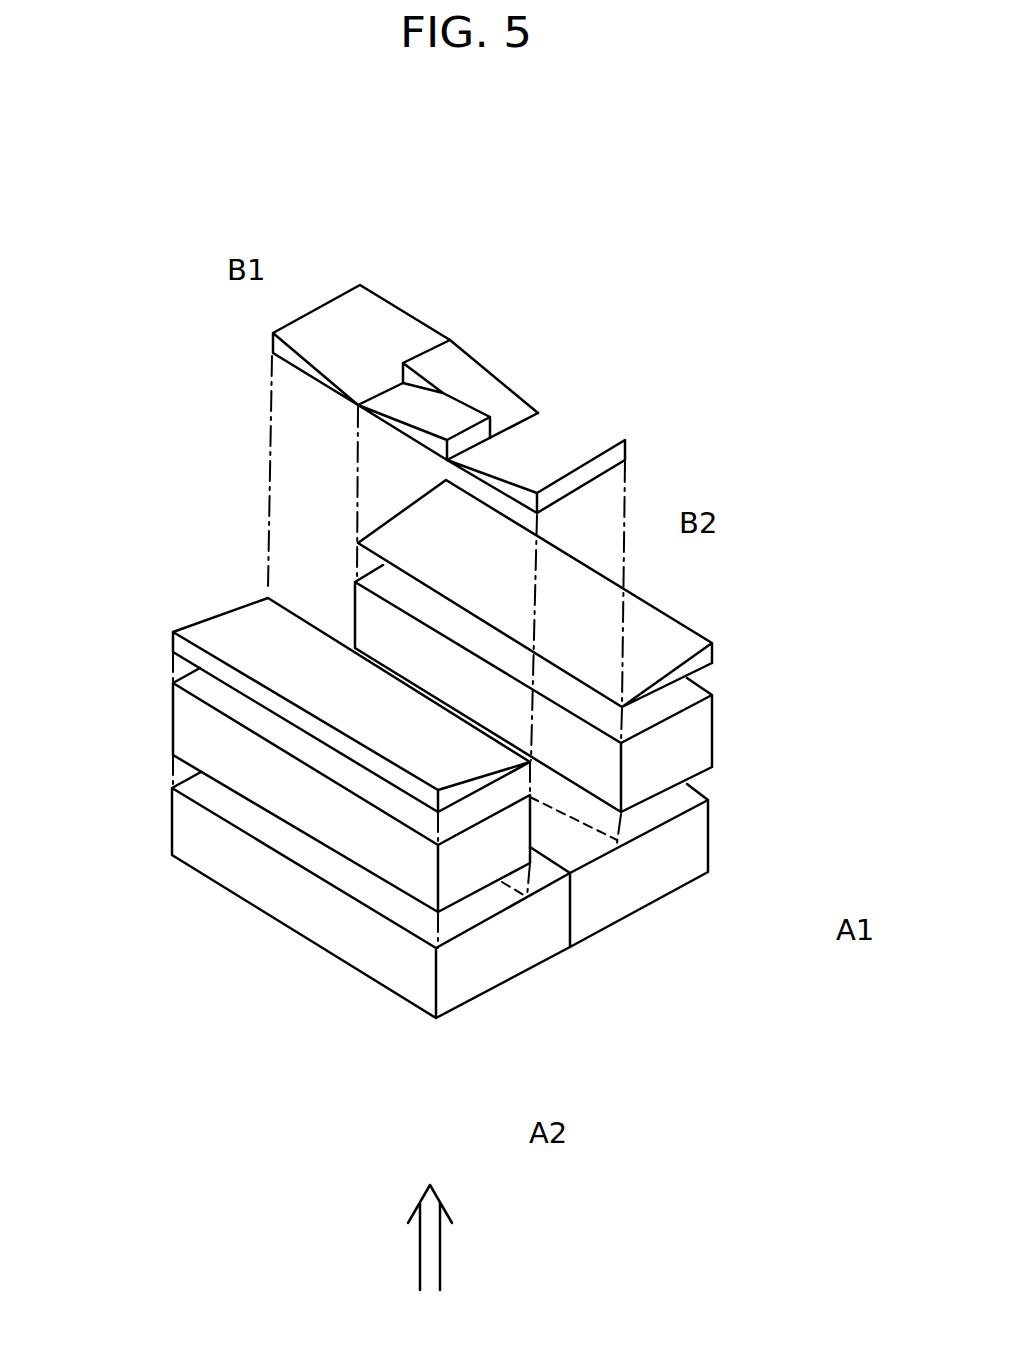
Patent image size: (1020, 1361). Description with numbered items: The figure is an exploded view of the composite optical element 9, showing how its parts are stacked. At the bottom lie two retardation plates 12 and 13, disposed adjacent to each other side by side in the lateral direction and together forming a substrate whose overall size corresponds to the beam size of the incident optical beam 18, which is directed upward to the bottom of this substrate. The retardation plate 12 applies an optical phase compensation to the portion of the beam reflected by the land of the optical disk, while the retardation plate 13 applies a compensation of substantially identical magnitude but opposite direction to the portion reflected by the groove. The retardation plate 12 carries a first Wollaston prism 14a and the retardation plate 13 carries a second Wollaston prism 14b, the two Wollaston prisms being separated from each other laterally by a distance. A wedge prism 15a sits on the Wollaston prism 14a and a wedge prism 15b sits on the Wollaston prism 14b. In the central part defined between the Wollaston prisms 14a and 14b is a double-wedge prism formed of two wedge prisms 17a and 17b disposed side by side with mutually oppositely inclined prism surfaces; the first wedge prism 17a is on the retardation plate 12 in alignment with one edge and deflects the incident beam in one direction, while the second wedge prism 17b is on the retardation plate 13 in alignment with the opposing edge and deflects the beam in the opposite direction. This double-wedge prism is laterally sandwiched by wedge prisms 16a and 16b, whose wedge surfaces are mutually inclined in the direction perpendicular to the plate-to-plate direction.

The composite optical element 9 is at (157, 182).
The retardation plate 12 is at (687, 851).
The retardation plate 13 is at (473, 975).
The first Wollaston prism 14a is at (690, 747).
The second Wollaston prism 14b is at (395, 870).
The wedge prism 15a is at (660, 649).
The wedge prism 15b is at (232, 630).
The wedge prism 16a is at (400, 337).
The wedge prism 16b is at (563, 440).
The first wedge prism 17a is at (489, 391).
The second wedge prism 17b is at (437, 412).
The incident optical beam 18 is at (442, 1262).